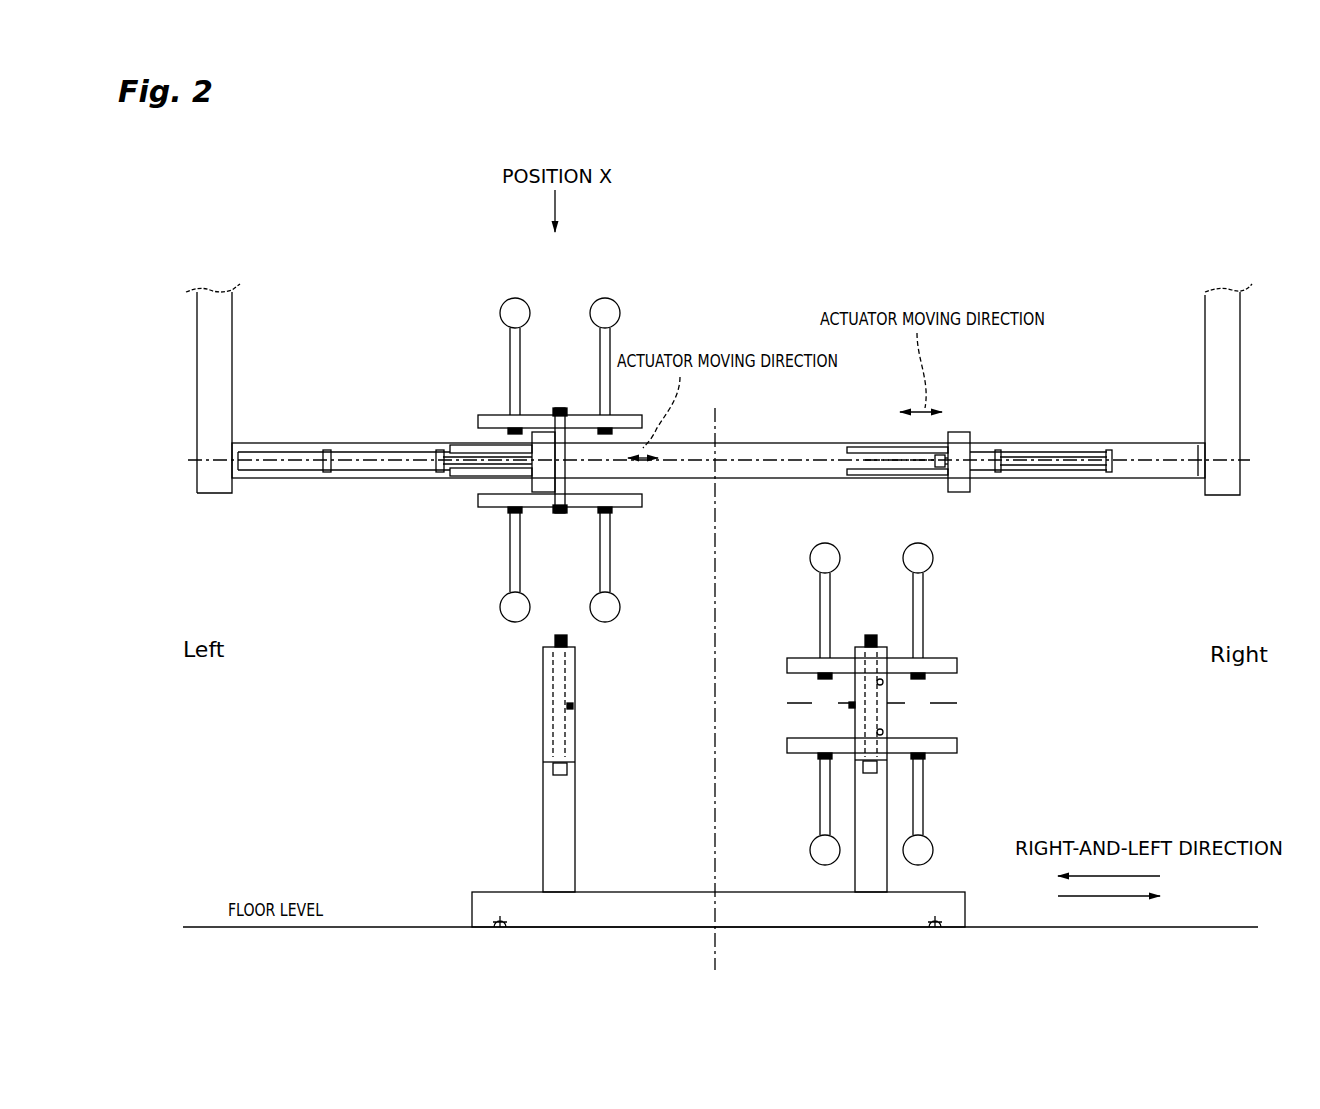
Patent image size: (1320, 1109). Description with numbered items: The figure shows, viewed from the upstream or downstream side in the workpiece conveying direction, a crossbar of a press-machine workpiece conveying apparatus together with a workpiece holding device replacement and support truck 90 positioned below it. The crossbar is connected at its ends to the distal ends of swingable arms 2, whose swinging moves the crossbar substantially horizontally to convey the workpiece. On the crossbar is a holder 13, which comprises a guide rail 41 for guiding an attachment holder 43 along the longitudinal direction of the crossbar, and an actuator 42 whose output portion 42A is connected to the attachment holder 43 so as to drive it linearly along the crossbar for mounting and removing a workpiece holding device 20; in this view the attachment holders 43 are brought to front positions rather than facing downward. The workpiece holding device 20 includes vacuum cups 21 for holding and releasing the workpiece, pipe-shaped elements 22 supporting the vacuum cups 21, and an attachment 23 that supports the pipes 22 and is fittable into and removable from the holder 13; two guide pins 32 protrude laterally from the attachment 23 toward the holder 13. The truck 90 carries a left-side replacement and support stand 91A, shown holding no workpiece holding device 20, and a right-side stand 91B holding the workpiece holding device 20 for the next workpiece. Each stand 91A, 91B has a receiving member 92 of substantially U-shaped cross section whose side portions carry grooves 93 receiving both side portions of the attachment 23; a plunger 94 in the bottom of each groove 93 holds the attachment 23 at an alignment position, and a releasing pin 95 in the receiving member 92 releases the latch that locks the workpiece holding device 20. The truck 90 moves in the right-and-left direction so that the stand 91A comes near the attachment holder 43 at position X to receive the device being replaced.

The swingable arm 2 is at (240, 309).
The holder 13 is at (718, 473).
The workpiece holding device 20 is at (745, 532).
The vacuum cup 21 is at (497, 325).
The pipe-shaped element 22 is at (478, 413).
The attachment 23 is at (558, 406).
The guide pin 32 is at (887, 684).
The guide rail 41 is at (452, 444).
The actuator 42 is at (363, 472).
The output portion 42A is at (473, 470).
The attachment holder 43 is at (543, 494).
The workpiece holding device replacement and support truck 90 is at (683, 753).
The workpiece holding device replacement and support stand 91A is at (540, 778).
The workpiece holding device replacement and support stand 91B is at (890, 803).
The receiving member 92 is at (691, 681).
The groove 93 is at (553, 663).
The plunger 94 is at (570, 640).
The releasing pin 95 is at (574, 706).